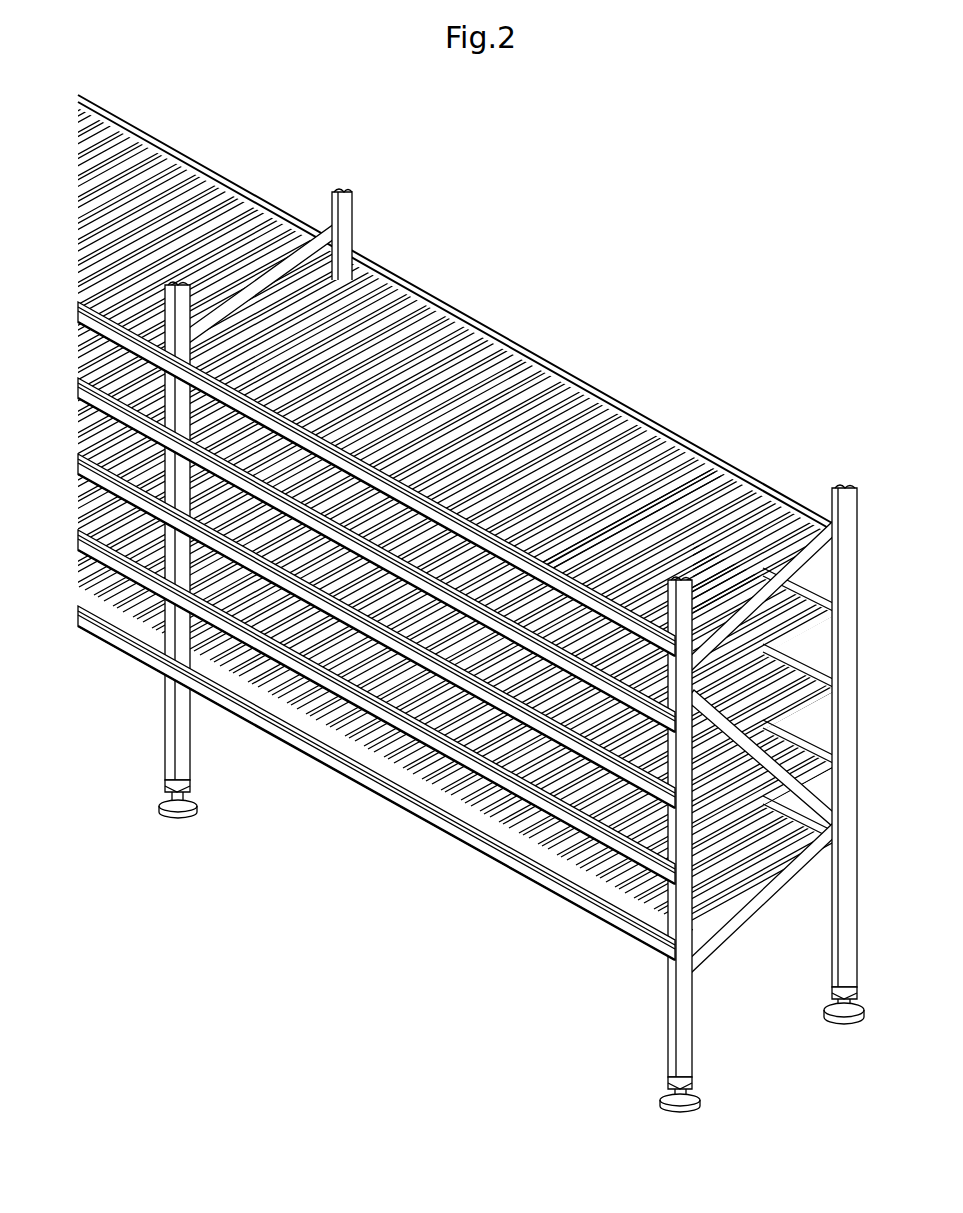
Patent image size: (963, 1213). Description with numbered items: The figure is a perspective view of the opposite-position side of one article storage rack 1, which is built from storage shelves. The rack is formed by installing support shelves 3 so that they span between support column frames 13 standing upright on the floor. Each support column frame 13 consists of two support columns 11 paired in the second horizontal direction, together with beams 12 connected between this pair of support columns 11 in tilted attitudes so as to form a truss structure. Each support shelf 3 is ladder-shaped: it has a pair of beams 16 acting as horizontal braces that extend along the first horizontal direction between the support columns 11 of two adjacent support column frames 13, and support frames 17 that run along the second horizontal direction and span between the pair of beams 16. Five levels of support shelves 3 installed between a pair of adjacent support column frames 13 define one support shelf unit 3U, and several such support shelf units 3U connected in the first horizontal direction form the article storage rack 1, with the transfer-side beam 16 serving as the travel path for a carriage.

The article storage rack 1 is at (579, 191).
The support shelf 3 is at (196, 148).
The support shelf unit 3U is at (152, 112).
The support column 11 is at (343, 216).
The beam 12 is at (292, 268).
The support column frame 13 is at (495, 630).
The beam 16 is at (497, 846).
The support frame 17 is at (681, 487).